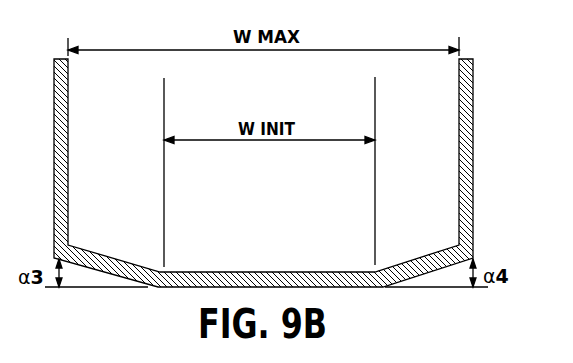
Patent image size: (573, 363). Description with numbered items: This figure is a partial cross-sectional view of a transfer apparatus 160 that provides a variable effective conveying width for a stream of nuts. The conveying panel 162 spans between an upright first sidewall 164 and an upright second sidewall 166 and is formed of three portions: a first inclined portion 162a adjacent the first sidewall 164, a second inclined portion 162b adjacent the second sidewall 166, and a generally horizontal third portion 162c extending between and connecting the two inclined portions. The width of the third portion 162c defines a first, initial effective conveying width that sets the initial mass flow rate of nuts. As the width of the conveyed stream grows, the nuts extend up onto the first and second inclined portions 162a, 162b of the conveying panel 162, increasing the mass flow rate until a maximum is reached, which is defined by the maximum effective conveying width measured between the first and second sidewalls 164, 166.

The transfer apparatus 160 is at (410, 40).
The conveying panel 162 is at (277, 271).
The first inclined portion 162a is at (120, 259).
The second inclined portion 162b is at (430, 255).
The third portion 162c is at (320, 272).
The first sidewall 164 is at (68, 89).
The second sidewall 166 is at (459, 105).